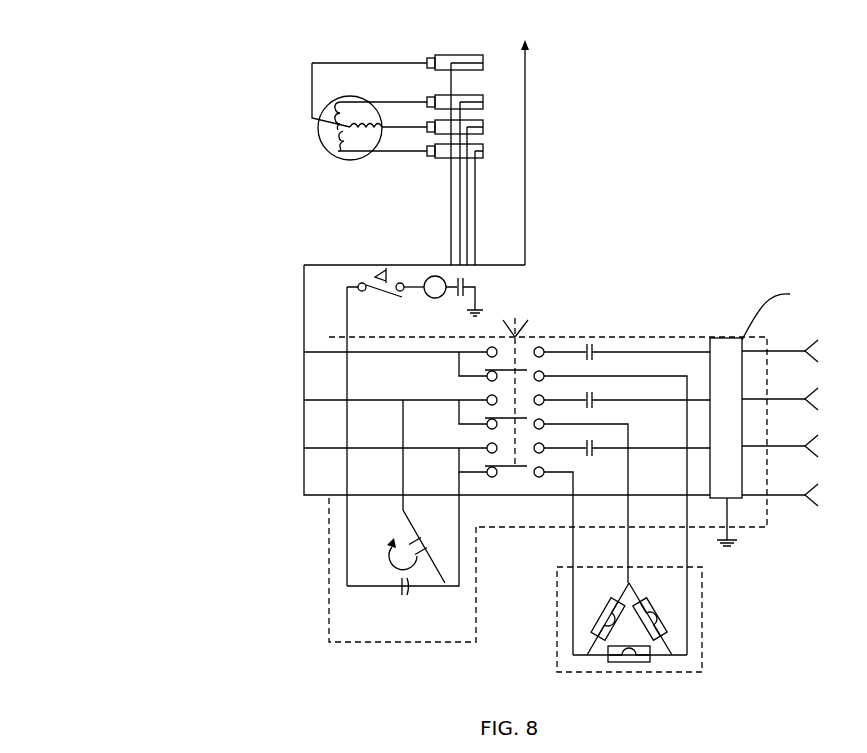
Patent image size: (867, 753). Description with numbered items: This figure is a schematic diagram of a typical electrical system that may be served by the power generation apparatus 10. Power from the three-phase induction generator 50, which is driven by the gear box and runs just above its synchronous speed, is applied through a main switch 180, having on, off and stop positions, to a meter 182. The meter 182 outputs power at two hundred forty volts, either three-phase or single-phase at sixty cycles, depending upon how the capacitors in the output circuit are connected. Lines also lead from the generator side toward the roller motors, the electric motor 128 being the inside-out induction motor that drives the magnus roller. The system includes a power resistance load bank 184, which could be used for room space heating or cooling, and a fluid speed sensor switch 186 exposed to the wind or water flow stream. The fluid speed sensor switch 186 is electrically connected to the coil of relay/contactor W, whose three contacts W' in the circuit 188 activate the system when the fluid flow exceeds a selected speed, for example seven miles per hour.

The power generation apparatus 10 is at (194, 105).
The induction generator 50 is at (381, 50).
The electric motor 128 is at (598, 142).
The fluid speed sensor switch 186 is at (341, 265).
The main switch 180 is at (545, 305).
The meter 182 is at (775, 416).
The circuit 188 is at (341, 546).
The power resistance load bank 184 is at (702, 591).